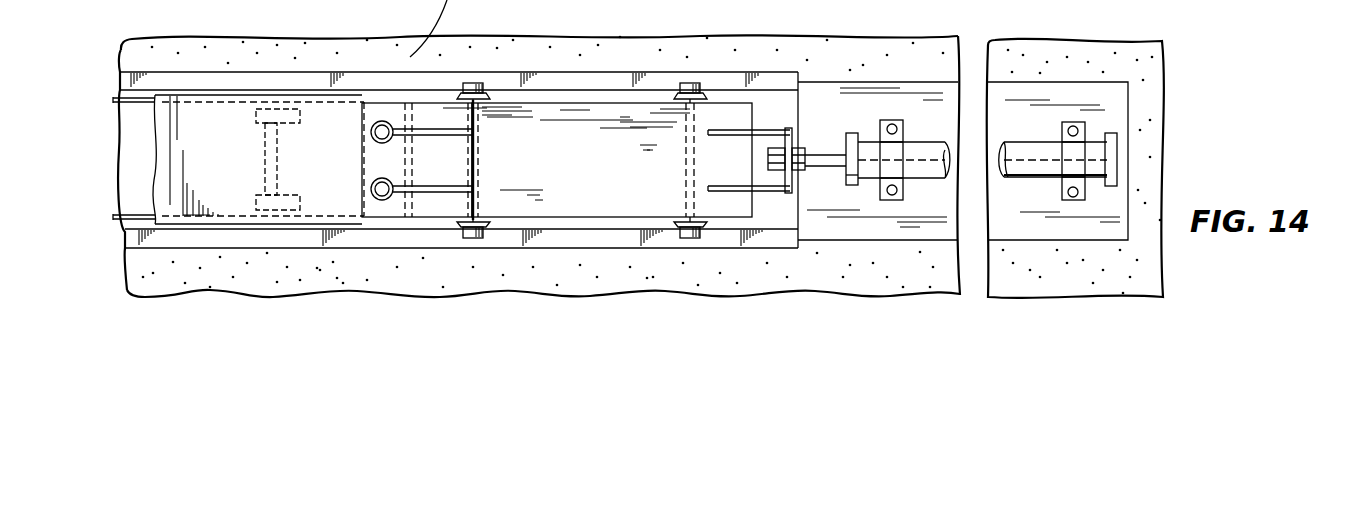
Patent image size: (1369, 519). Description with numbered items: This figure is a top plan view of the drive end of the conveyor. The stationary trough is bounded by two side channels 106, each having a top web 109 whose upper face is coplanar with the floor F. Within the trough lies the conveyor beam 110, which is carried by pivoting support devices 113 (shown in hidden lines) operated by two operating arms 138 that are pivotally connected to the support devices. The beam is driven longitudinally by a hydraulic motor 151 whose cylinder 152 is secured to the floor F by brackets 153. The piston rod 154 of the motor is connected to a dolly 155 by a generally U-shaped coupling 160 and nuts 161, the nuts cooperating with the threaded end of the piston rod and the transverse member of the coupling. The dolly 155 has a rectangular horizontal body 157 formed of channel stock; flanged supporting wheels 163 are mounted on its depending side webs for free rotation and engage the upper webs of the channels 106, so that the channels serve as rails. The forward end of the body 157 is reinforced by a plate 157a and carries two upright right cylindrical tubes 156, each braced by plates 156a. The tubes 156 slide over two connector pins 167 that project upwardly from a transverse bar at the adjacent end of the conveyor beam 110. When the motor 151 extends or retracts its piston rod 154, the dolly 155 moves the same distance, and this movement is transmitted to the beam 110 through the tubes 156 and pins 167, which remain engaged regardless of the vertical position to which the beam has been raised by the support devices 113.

The side channel 106 is at (112, 79).
The operating arm 138 is at (113, 101).
The conveyor beam 110 is at (150, 154).
The top web 109 is at (230, 80).
The support device 113 is at (256, 133).
The upright right cylindrical tube 156 is at (372, 134).
The connector pin 167 is at (375, 141).
The bracing plate 156a is at (464, 136).
The reinforcing plate 157a is at (477, 146).
The dolly 155 is at (606, 182).
The body 157 is at (624, 231).
The flanged supporting wheel 163 is at (476, 83).
The coupling 160 is at (787, 131).
The nut 161 is at (805, 171).
The piston rod 154 is at (826, 155).
The bracket 153 is at (895, 112).
The cylinder 152 is at (1036, 142).
The hydraulic motor 151 is at (1126, 152).
The floor F is at (330, 36).